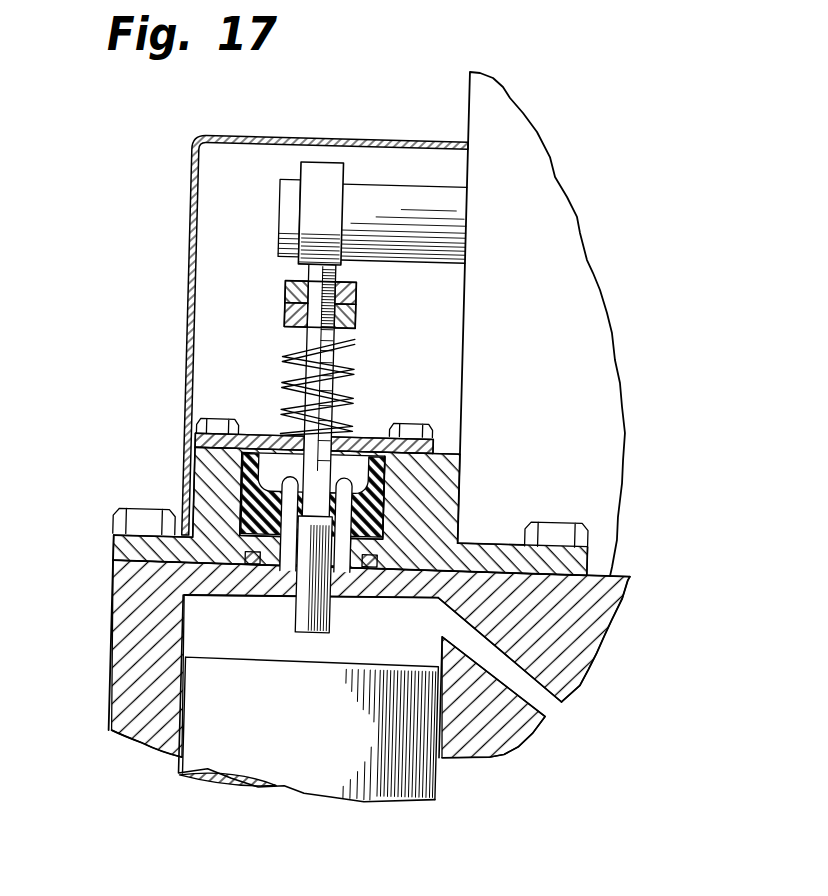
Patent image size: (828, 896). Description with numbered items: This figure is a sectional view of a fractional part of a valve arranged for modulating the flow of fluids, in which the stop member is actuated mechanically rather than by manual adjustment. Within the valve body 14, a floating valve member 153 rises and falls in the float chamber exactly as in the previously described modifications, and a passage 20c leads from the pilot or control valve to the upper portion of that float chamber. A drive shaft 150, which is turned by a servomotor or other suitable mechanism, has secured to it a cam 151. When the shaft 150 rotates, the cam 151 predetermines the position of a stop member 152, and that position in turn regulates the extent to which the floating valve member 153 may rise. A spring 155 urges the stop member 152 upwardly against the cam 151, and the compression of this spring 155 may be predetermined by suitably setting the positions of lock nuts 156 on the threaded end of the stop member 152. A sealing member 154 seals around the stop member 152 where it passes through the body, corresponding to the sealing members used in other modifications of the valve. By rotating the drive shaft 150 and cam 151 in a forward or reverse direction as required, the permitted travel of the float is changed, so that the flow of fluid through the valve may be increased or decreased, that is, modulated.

The valve body 14 is at (115, 637).
The passage 20c is at (567, 698).
The drive shaft 150 is at (401, 197).
The cam 151 is at (300, 170).
The stop member 152 is at (332, 633).
The floating valve member 153 is at (247, 666).
The sealing member 154 is at (353, 477).
The spring 155 is at (353, 366).
The lock nuts 156 is at (281, 315).